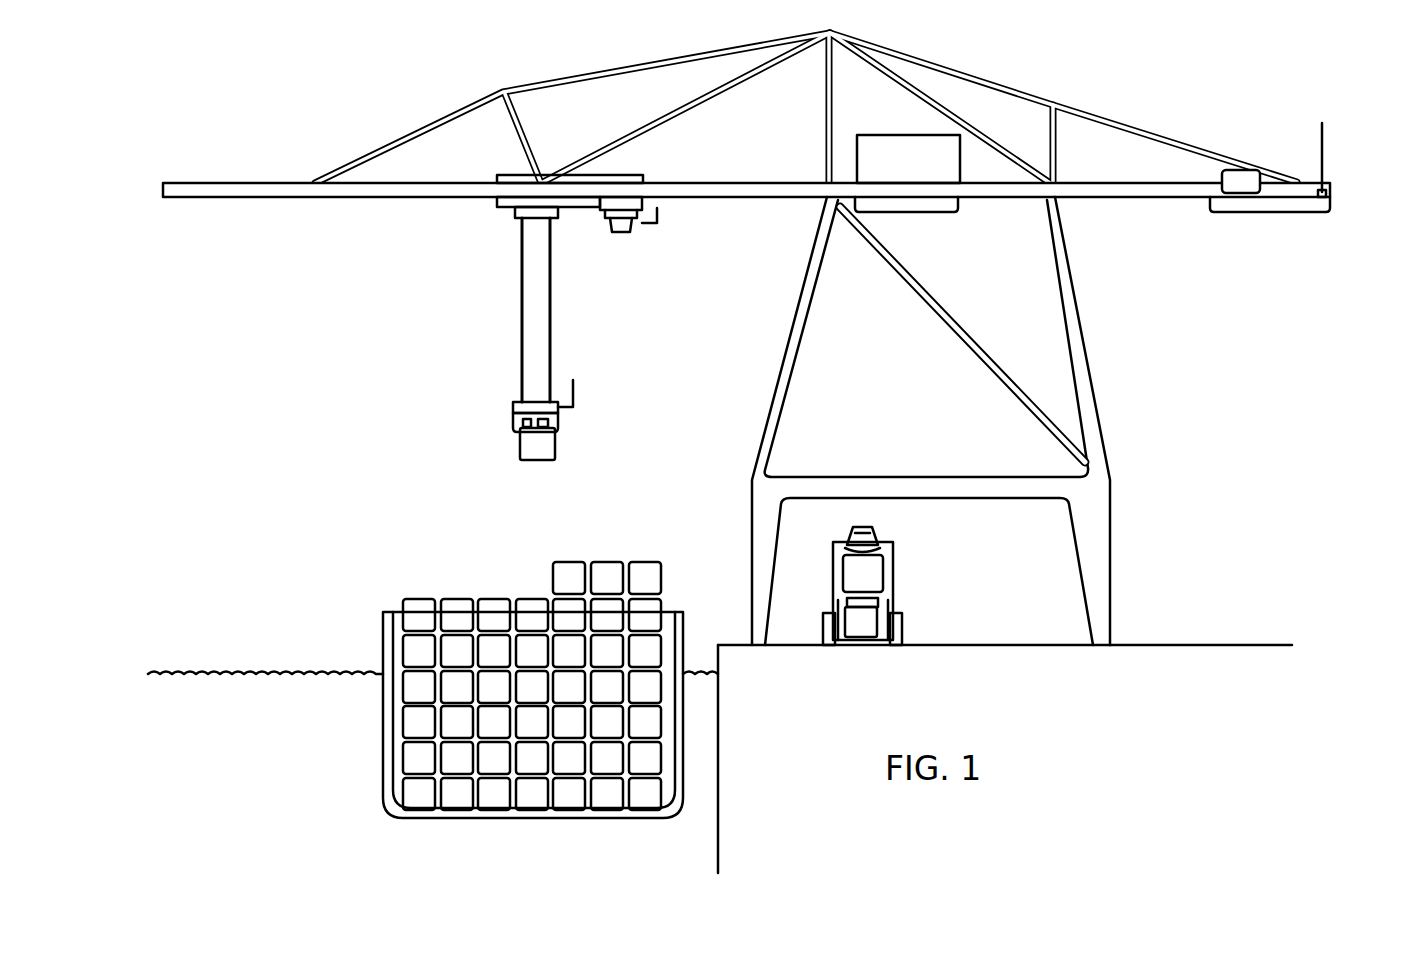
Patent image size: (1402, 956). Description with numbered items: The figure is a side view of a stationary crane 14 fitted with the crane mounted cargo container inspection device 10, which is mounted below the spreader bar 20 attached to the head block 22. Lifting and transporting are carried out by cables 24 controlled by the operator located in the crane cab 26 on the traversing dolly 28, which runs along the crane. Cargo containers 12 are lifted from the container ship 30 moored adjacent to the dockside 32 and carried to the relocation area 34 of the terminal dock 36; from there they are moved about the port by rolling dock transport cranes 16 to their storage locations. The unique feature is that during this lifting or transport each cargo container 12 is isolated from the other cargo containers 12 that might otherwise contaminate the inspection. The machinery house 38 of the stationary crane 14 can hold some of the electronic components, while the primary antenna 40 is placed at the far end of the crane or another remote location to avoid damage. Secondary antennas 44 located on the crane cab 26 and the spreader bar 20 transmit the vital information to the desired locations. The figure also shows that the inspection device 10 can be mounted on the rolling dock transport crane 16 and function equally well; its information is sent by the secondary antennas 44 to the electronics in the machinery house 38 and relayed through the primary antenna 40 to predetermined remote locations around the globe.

The crane mounted cargo container inspection device 10 is at (546, 430).
The cargo container 12 is at (537, 462).
The stationary crane 14 is at (1085, 335).
The rolling dock transport crane 16 is at (893, 560).
The spreader bar 20 is at (512, 425).
The head block 22 is at (513, 410).
The cables 24 is at (552, 297).
The crane cab 26 is at (624, 230).
The traversing dolly 28 is at (502, 212).
The container ship 30 is at (380, 653).
The dockside 32 is at (716, 662).
The relocation area 34 is at (948, 645).
The terminal dock 36 is at (1192, 640).
The machinery house 38 is at (920, 172).
The primary antenna 40 is at (1322, 140).
The secondary antennas 44 is at (657, 208).